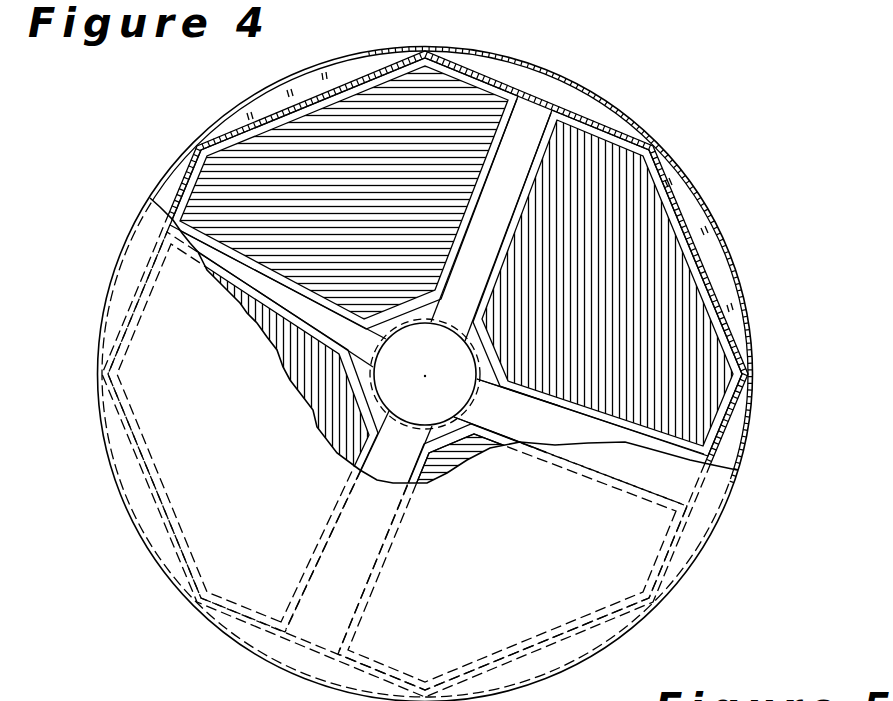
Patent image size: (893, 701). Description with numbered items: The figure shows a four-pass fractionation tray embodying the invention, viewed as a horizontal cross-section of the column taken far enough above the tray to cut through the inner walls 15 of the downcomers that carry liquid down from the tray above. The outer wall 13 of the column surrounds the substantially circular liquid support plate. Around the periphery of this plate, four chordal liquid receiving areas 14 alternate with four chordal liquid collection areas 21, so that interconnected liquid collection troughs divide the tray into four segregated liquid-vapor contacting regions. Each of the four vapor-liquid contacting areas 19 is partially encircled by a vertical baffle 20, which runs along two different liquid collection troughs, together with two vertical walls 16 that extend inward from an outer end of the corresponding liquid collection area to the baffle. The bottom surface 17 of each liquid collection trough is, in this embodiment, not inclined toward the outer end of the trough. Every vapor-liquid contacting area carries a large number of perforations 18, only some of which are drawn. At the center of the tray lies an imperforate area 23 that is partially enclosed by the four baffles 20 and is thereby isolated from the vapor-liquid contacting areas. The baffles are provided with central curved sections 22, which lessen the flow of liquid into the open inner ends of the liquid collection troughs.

The outer wall 13 is at (441, 374).
The chordal liquid receiving area 14 is at (417, 369).
The inner wall of downcomer 15 is at (406, 374).
The vertical wall 16 is at (425, 374).
The bottom surface of liquid collection trough 17 is at (437, 352).
The perforations 18 is at (418, 122).
The vapor-liquid contacting area 19 is at (425, 374).
The vertical baffle 20 is at (470, 478).
The chordal liquid collection area 21 is at (523, 223).
The central curved section 22 is at (512, 556).
The imperforate area 23 is at (441, 360).